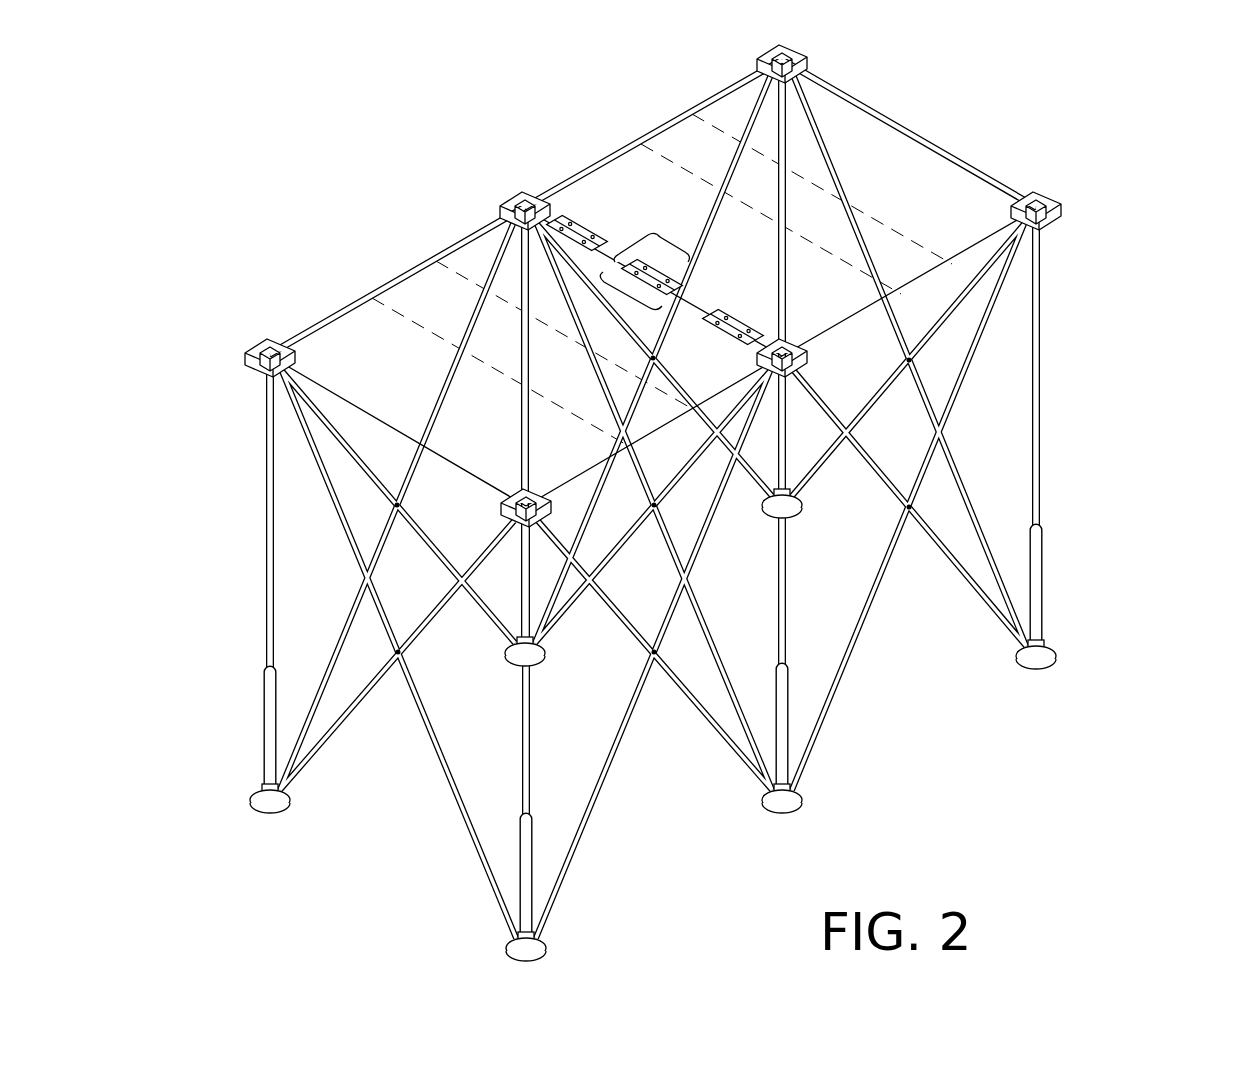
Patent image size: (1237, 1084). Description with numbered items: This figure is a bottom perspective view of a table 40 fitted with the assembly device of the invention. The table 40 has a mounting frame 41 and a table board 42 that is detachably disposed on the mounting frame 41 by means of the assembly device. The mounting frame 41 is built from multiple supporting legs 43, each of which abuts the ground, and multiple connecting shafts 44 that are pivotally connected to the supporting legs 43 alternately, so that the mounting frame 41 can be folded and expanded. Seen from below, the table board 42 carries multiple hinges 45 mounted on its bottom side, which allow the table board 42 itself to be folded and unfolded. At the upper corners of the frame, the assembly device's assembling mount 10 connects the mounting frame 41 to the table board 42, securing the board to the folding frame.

The assembling mount 10 is at (750, 47).
The table 40 is at (705, 501).
The mounting frame 41 is at (705, 518).
The table board 42 is at (940, 120).
The supporting leg 43 is at (266, 512).
The connecting shaft 44 is at (338, 733).
The hinge 45 is at (665, 252).